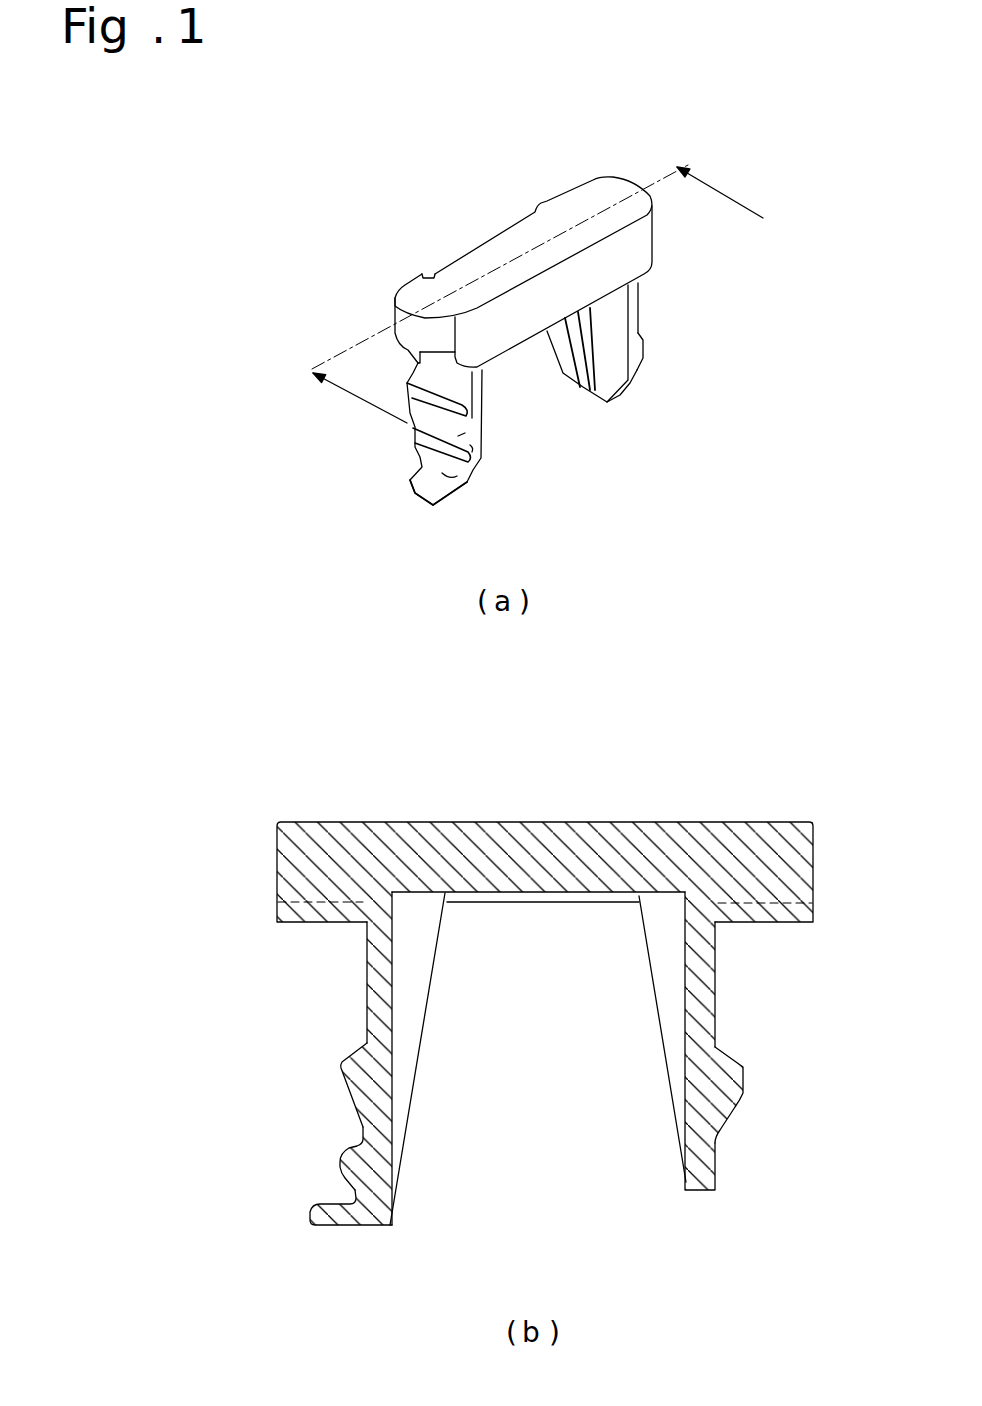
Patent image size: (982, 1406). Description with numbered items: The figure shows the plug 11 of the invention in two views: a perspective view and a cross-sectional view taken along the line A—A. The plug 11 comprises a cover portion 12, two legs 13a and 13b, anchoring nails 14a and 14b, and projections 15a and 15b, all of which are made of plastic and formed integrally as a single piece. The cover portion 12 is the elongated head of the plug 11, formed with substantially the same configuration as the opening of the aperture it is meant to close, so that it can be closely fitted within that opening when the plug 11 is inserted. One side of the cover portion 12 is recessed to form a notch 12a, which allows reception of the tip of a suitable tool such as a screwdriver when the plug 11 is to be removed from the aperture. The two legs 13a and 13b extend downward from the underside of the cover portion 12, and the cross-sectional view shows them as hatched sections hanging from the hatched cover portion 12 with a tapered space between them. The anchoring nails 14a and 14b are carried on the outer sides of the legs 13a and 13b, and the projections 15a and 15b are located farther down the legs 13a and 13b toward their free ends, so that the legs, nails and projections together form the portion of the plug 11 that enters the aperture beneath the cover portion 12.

The plug 11 is at (416, 191).
The cover portion 12 is at (653, 243).
The notch 12a is at (428, 272).
The leg 13a is at (485, 393).
The leg 13b is at (643, 308).
The anchoring nail 14a is at (470, 420).
The anchoring nail 14b is at (647, 353).
The projection 15a is at (477, 458).
The projection 15b is at (408, 480).